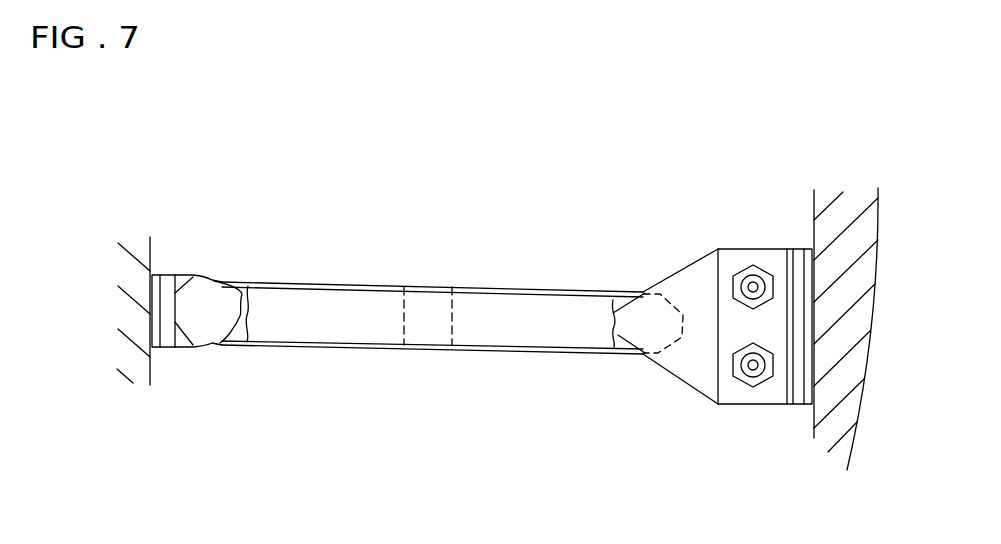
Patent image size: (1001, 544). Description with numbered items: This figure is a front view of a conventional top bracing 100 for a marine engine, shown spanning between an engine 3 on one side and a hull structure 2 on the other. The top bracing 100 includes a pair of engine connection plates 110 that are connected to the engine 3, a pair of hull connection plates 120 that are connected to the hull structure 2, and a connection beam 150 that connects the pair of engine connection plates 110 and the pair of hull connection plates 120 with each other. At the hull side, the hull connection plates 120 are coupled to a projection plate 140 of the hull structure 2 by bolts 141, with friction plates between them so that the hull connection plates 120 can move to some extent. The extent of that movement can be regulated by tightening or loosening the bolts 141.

The hull structure 2 is at (822, 202).
The engine 3 is at (125, 370).
The top bracing 100 is at (482, 321).
The engine connection plates 110 is at (185, 276).
The hull connection plates 120 is at (683, 368).
The projection plate 140 is at (797, 407).
The bolts 141 is at (747, 270).
The connection beam 150 is at (355, 331).